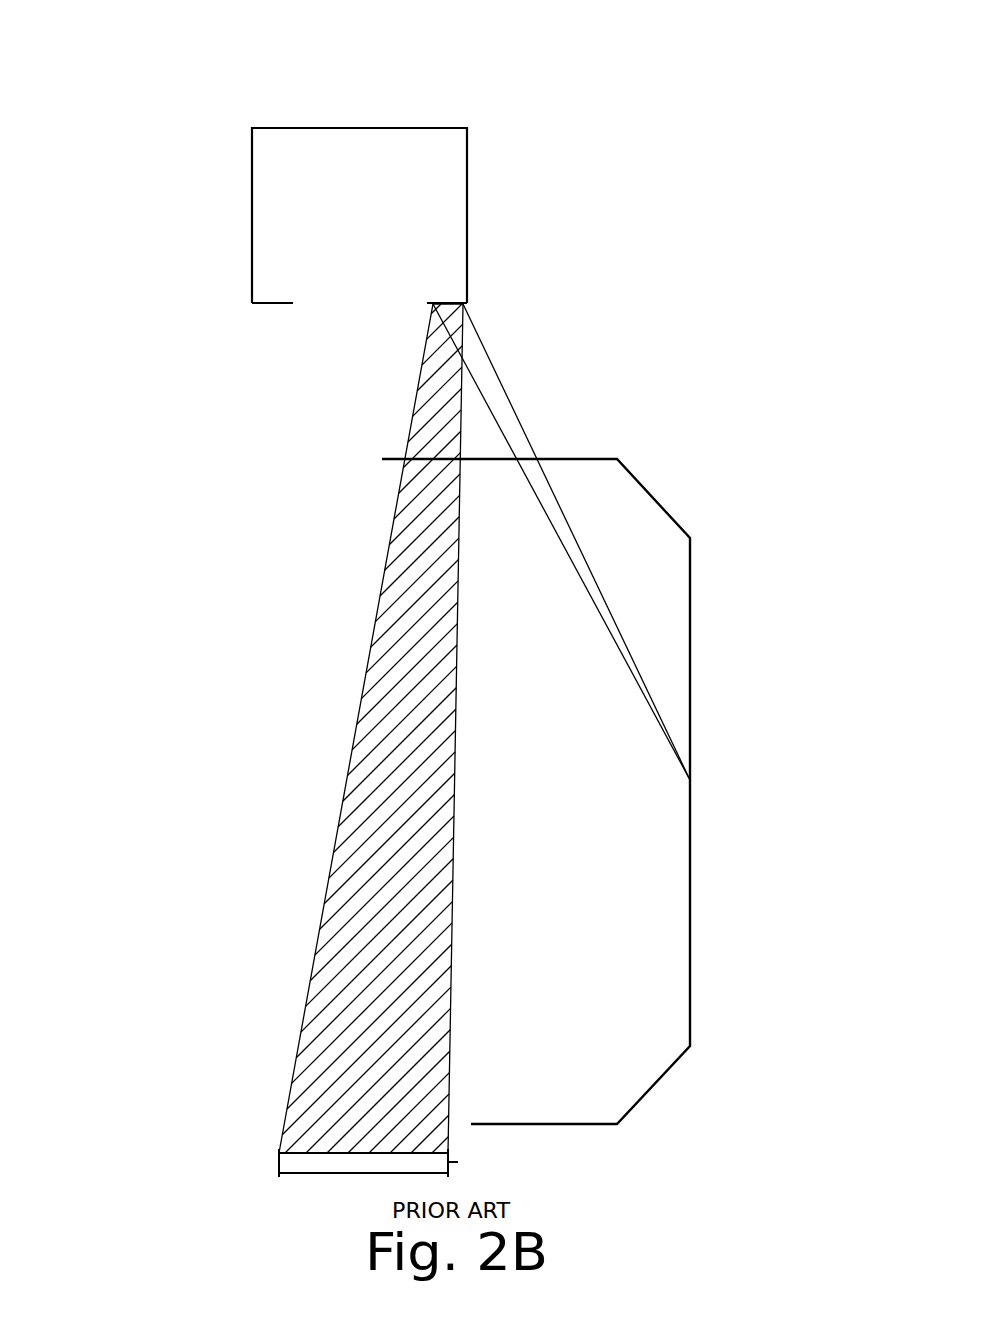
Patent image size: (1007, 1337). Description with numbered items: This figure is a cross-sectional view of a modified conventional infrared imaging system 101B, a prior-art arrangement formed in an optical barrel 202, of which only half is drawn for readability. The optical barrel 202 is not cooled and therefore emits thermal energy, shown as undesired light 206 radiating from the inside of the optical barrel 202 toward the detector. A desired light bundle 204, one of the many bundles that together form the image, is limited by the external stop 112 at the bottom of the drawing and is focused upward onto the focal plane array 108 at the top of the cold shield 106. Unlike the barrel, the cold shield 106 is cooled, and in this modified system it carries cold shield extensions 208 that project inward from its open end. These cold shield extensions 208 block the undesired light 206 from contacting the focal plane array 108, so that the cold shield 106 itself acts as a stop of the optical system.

The modified conventional infrared imaging system 101B is at (460, 599).
The cold shield 106 is at (355, 215).
The focal plane array 108 is at (396, 69).
The cold shield extensions 208 is at (359, 236).
The desired light bundle 204 is at (353, 728).
The undesired light 206 is at (561, 542).
The optical barrel 202 is at (627, 791).
The external stop 112 is at (285, 1163).